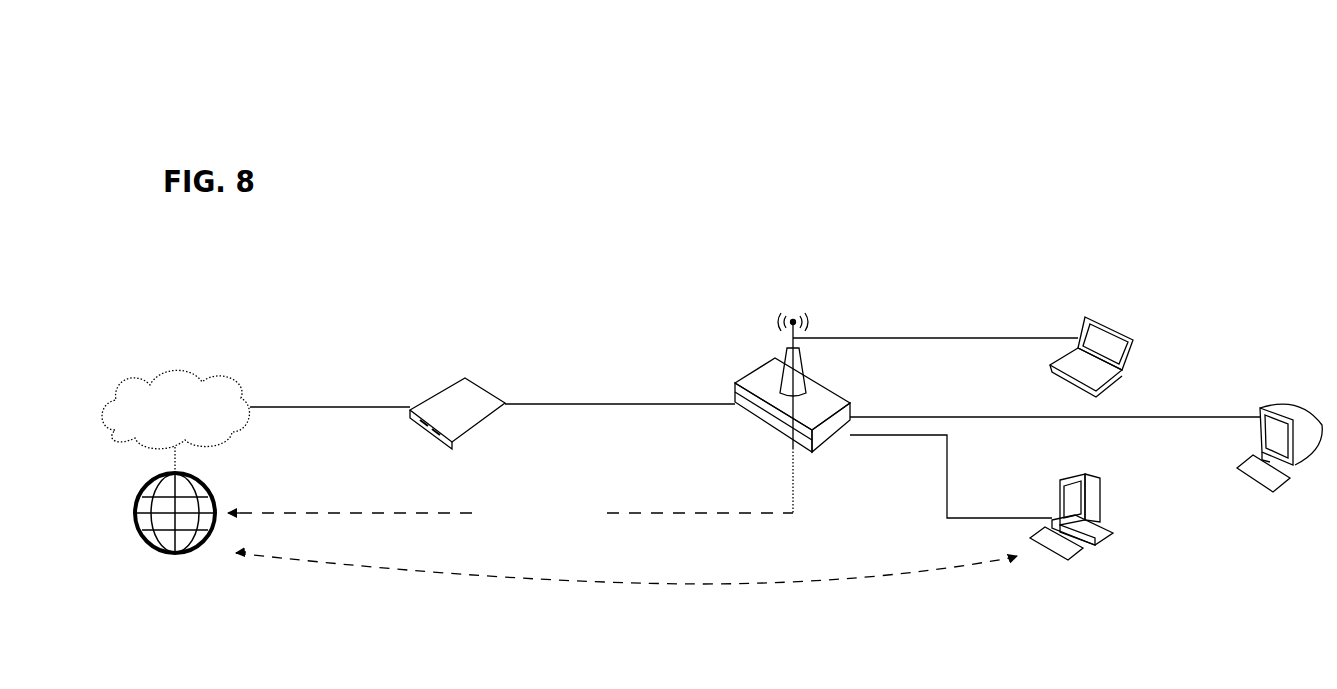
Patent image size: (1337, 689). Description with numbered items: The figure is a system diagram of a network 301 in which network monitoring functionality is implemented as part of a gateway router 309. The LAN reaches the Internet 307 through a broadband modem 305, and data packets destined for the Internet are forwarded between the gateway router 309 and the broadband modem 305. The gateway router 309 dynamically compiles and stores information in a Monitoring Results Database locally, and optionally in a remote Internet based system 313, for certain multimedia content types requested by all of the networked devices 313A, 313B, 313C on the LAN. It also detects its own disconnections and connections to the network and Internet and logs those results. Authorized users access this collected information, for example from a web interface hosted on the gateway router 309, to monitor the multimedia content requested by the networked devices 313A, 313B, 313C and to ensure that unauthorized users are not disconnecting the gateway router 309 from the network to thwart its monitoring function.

The network monitoring system 301 is at (689, 178).
The broadband modem 305 is at (418, 405).
The Internet 307 is at (143, 375).
The gateway router 309 is at (750, 372).
The remote Internet based system 313 is at (173, 553).
The networked device 313A is at (1083, 478).
The networked device 313B is at (1300, 420).
The networked device 313C is at (1100, 318).